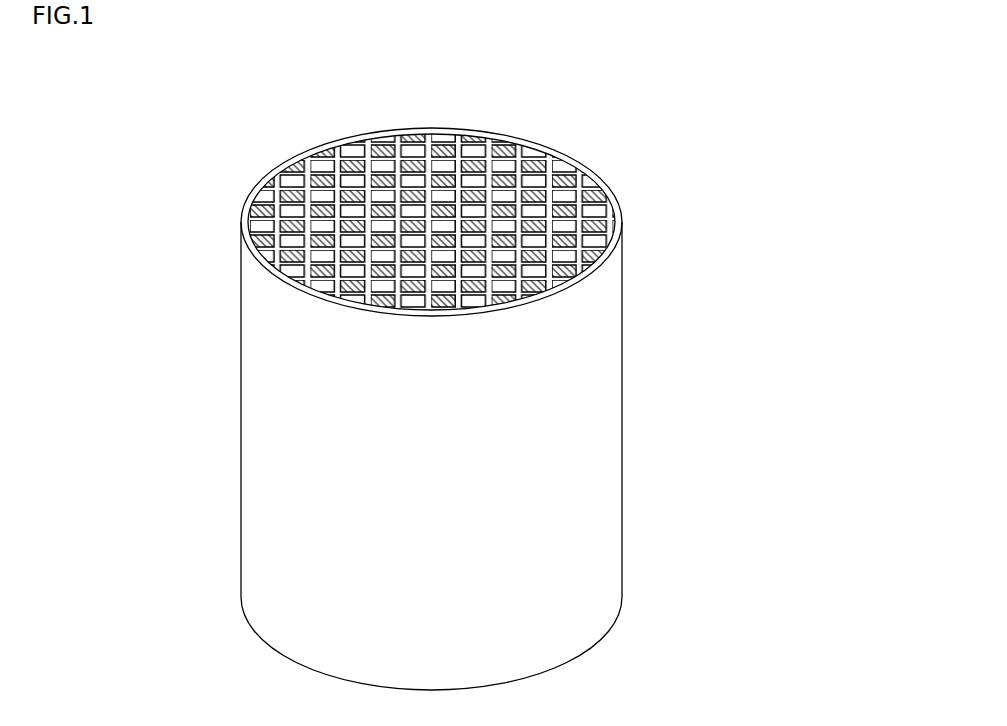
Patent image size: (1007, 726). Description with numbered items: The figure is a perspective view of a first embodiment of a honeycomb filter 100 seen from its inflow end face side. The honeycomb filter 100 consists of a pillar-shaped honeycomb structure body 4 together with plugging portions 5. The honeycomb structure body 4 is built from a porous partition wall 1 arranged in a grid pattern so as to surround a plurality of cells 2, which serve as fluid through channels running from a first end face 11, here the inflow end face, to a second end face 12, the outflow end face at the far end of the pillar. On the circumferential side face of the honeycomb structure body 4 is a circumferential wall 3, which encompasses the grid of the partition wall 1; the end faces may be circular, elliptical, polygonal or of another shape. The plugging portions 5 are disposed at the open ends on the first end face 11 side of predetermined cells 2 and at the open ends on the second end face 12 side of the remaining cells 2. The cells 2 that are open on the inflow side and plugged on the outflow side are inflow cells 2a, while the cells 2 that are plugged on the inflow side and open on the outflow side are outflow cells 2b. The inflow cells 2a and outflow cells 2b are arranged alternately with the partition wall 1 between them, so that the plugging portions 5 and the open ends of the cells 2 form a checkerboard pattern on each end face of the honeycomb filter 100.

The honeycomb filter 100 is at (757, 78).
The partition wall 1 is at (478, 187).
The cells 2 is at (478, 187).
The inflow cells 2a is at (536, 212).
The outflow cells 2b is at (573, 242).
The circumferential wall 3 is at (464, 473).
The honeycomb structure body 4 is at (465, 199).
The plugging portions 5 is at (463, 137).
The first end face 11 is at (312, 141).
The second end face 12 is at (266, 651).